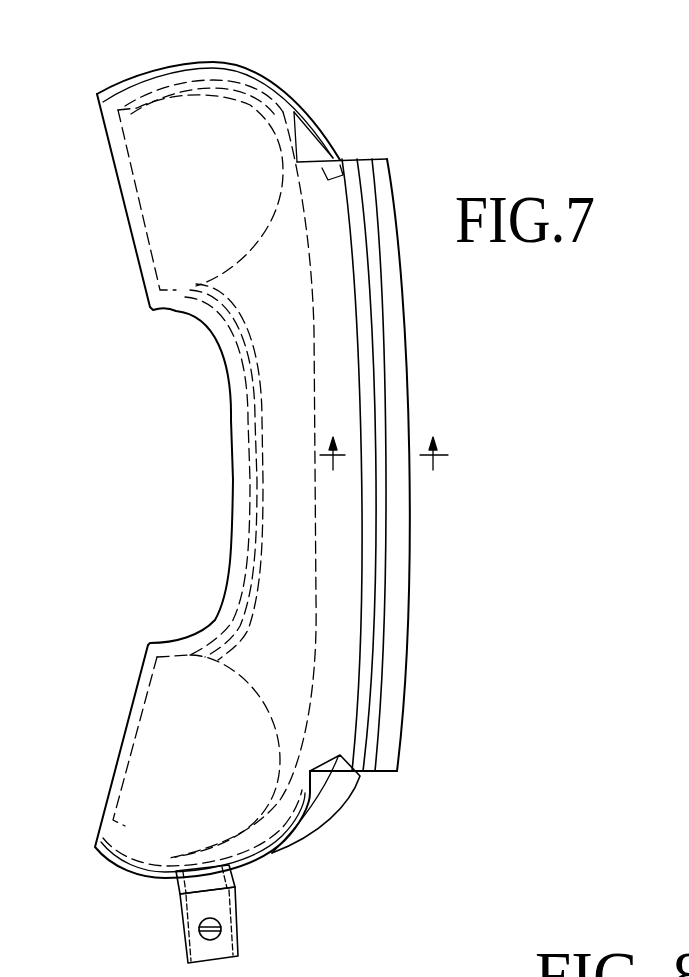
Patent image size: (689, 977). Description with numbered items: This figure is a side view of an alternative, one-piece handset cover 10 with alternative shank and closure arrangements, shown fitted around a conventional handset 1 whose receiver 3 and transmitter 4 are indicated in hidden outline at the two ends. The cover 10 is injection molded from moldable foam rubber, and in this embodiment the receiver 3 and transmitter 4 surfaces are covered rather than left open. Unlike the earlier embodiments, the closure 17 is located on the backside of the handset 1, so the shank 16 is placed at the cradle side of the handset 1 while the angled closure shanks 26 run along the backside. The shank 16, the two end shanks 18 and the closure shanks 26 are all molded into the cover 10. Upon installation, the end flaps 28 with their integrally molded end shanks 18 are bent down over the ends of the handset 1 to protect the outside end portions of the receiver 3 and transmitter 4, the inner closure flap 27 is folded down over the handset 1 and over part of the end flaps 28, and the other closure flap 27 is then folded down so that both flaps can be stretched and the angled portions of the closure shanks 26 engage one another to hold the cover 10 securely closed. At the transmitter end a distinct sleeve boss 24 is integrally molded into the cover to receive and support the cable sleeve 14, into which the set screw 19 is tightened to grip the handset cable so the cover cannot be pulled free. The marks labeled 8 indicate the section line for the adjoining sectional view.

The handset 1 is at (308, 700).
The receiver 3 is at (108, 176).
The transmitter 4 is at (113, 821).
The section line 8 is at (387, 465).
The handset cover 10 is at (233, 458).
The cable sleeve 14 is at (192, 938).
The shank 16 is at (245, 407).
The closure 17 is at (368, 140).
The end shanks 18 is at (201, 80).
The set screw 19 is at (222, 932).
The sleeve boss 24 is at (177, 887).
The closure shanks 26 is at (392, 686).
The closure flap 27 is at (348, 260).
The end flaps 28 is at (322, 129).